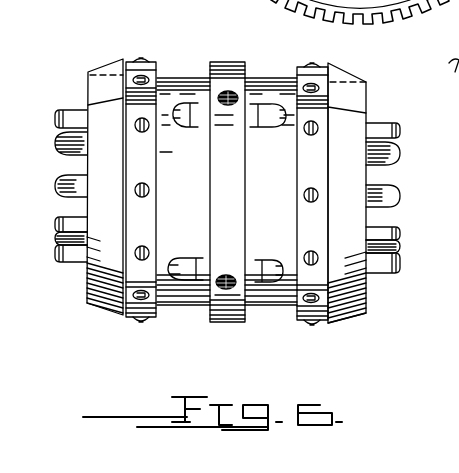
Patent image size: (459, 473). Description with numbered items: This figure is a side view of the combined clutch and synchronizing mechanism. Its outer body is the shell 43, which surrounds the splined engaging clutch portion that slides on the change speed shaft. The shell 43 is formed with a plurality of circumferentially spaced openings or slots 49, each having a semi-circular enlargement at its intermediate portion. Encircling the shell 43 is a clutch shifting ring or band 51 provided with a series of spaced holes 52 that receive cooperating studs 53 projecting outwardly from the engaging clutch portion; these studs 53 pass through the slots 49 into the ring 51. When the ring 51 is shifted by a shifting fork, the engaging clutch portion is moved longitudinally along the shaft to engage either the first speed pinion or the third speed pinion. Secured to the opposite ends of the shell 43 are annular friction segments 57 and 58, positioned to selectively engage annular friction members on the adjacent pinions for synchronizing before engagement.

The shell 43 is at (177, 78).
The slots 49 is at (188, 116).
The clutch shifting ring 51 is at (232, 192).
The holes 52 is at (229, 97).
The studs 53 is at (217, 97).
The annular friction segment 57 is at (117, 313).
The annular friction segment 58 is at (328, 322).